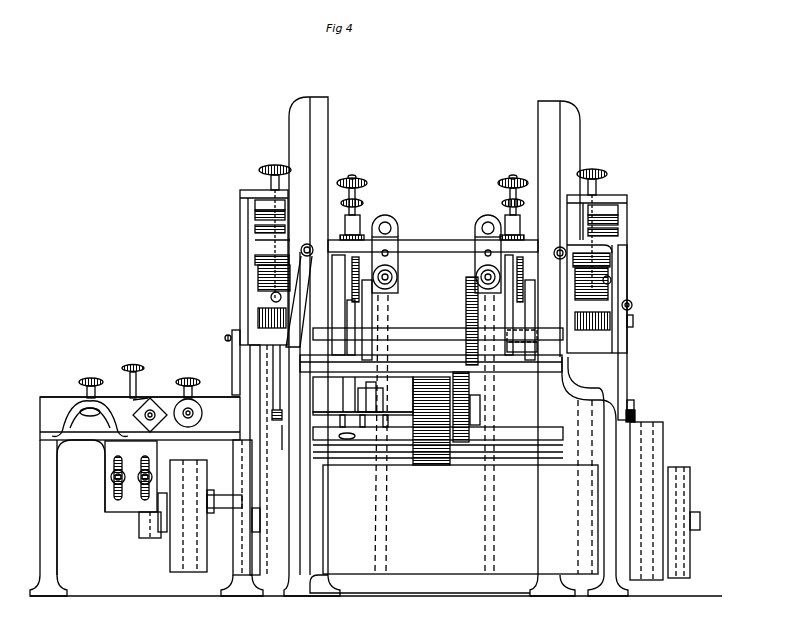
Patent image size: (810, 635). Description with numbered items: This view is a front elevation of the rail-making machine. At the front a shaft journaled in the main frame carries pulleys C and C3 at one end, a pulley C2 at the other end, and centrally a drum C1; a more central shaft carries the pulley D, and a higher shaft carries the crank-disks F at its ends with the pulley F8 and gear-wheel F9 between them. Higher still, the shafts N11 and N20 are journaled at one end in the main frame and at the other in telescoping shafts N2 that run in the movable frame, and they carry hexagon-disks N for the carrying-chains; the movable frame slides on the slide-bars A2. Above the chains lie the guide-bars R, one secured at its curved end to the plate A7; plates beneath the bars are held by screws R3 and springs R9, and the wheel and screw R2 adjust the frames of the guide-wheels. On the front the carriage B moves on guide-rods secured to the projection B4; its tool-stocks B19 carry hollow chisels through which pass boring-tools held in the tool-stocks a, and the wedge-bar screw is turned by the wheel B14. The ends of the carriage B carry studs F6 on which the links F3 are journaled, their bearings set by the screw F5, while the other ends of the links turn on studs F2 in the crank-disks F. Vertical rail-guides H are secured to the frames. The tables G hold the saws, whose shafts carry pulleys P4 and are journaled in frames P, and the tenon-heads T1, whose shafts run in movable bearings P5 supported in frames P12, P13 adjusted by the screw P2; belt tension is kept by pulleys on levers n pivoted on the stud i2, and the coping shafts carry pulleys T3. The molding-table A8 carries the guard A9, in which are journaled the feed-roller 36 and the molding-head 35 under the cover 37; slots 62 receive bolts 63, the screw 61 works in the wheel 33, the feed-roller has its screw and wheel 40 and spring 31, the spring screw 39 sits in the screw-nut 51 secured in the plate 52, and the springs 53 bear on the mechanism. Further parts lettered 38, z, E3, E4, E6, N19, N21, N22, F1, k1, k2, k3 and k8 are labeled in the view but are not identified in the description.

The vertical rail-guide H is at (330, 140).
The molding-table A8 is at (100, 440).
The guard A9 is at (148, 398).
The spring 31 is at (150, 466).
The bolt 63 is at (110, 477).
The slot 62 is at (113, 490).
The cam 38 is at (72, 412).
The plate 52 is at (90, 416).
The screw-nut 51 is at (95, 426).
The spring 53 is at (105, 424).
The cover 37 is at (138, 405).
The molding-head 35 is at (156, 422).
The feed-roller 36 is at (202, 413).
The screw 39 is at (98, 379).
The wheel 33 is at (136, 364).
The screw 61 is at (130, 388).
The screw and wheel 40 is at (190, 377).
The bearing block E4 is at (139, 528).
The pulley E3 is at (173, 555).
The shaft E6 is at (218, 494).
The pulley C2 is at (262, 540).
The lever n is at (232, 350).
The stud i2 is at (225, 338).
The frame P is at (243, 254).
The screw P2 is at (270, 165).
The movable bearing P5 is at (256, 206).
The frame P13 is at (255, 222).
The section line z is at (287, 222).
The frame P12 is at (255, 260).
The pulley P4 is at (258, 288).
The projection B4 is at (308, 244).
The carriage B is at (446, 252).
The spring R9 is at (435, 234).
The guide-bar R is at (360, 224).
The screw R3 is at (363, 204).
The wheel and screw R2 is at (366, 185).
The tool-stock a is at (398, 228).
The wheel B14 is at (394, 274).
The tool-stock B19 is at (476, 272).
The tenon-head T1 is at (432, 305).
The pulley T3 is at (359, 279).
The table G is at (524, 278).
The hexagon-disk N is at (362, 305).
The telescoping shaft N2 is at (362, 318).
The rack N19 is at (466, 322).
The shaft N20 is at (412, 330).
The block N21 is at (525, 330).
The block N22 is at (528, 342).
The slide-bar A2 is at (410, 362).
The link F3 is at (279, 368).
The stud F2 is at (272, 412).
The bracket F1 is at (284, 432).
The shaft N11 is at (330, 396).
The pulley F8 is at (425, 394).
The part k1 is at (349, 420).
The part k2 is at (366, 420).
The part k3 is at (393, 420).
The part k8 is at (341, 436).
The gear-wheel F9 is at (480, 412).
The plate A7 is at (500, 450).
The drum C1 is at (460, 519).
The crank-disk F is at (618, 384).
The screw F5 is at (632, 304).
The stud F6 is at (634, 320).
The pulley D is at (655, 447).
The pulley C is at (690, 495).
The pulley C3 is at (686, 540).